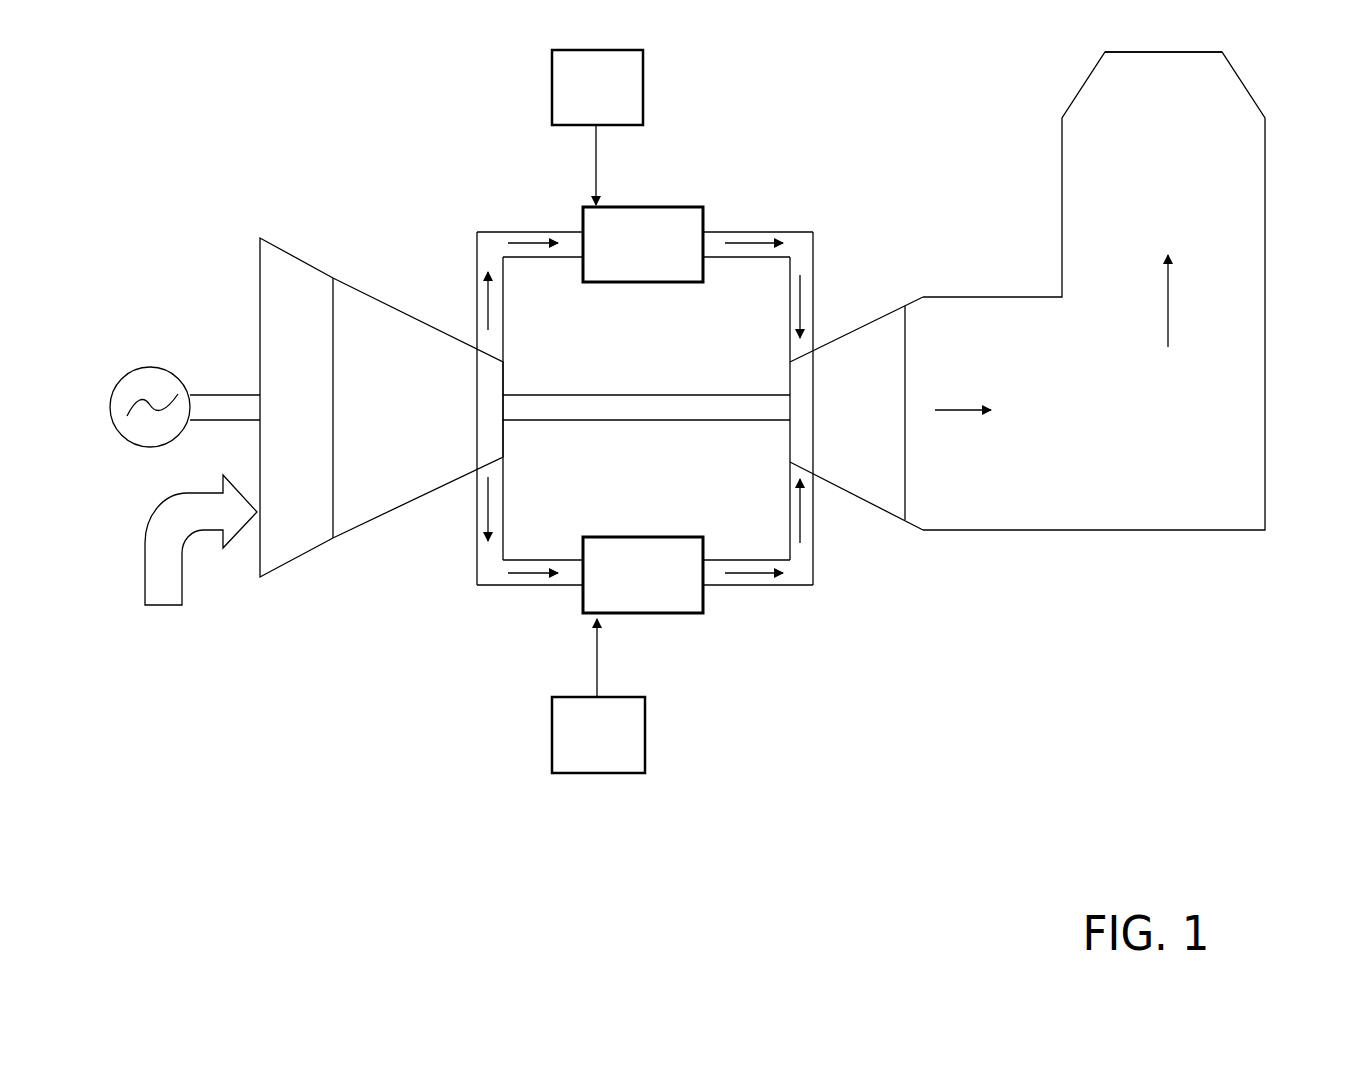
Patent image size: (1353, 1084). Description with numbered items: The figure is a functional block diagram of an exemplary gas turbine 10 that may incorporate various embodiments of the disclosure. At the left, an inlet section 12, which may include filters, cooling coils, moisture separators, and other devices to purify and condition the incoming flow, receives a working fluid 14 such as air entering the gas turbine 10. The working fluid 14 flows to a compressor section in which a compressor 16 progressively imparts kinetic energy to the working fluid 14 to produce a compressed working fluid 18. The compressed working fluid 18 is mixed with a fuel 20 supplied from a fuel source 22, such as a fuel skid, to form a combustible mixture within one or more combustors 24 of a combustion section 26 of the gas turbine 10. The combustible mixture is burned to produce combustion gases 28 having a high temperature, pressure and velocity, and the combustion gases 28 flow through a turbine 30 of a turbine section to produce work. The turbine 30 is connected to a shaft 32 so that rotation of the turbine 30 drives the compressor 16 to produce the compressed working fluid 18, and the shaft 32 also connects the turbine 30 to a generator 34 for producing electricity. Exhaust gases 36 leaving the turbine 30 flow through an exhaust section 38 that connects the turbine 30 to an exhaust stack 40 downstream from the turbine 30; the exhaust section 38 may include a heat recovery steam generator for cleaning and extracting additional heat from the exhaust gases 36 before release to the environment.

The gas turbine 10 is at (998, 852).
The inlet section 12 is at (283, 422).
The working fluid 14 is at (160, 607).
The compressor 16 is at (398, 422).
The compressed working fluid 18 is at (477, 317).
The fuel 20 is at (598, 682).
The fuel source 22 is at (582, 103).
The combustor 24 is at (626, 260).
The combustion section 26 is at (477, 775).
The combustion gases 28 is at (803, 303).
The turbine 30 is at (833, 422).
The shaft 32 is at (637, 422).
The generator 34 is at (148, 367).
The exhaust gases 36 is at (953, 410).
The exhaust section 38 is at (1148, 420).
The exhaust stack 40 is at (1267, 177).